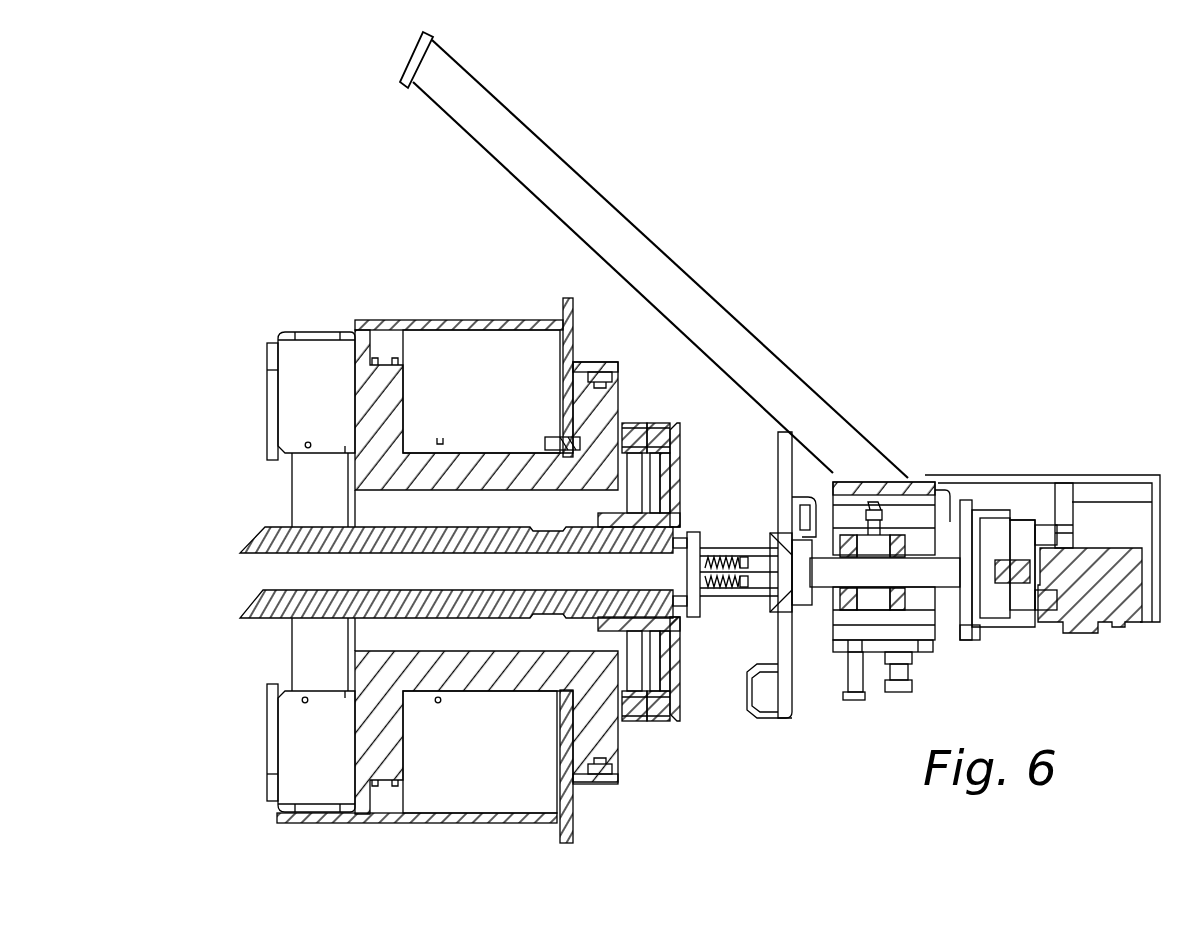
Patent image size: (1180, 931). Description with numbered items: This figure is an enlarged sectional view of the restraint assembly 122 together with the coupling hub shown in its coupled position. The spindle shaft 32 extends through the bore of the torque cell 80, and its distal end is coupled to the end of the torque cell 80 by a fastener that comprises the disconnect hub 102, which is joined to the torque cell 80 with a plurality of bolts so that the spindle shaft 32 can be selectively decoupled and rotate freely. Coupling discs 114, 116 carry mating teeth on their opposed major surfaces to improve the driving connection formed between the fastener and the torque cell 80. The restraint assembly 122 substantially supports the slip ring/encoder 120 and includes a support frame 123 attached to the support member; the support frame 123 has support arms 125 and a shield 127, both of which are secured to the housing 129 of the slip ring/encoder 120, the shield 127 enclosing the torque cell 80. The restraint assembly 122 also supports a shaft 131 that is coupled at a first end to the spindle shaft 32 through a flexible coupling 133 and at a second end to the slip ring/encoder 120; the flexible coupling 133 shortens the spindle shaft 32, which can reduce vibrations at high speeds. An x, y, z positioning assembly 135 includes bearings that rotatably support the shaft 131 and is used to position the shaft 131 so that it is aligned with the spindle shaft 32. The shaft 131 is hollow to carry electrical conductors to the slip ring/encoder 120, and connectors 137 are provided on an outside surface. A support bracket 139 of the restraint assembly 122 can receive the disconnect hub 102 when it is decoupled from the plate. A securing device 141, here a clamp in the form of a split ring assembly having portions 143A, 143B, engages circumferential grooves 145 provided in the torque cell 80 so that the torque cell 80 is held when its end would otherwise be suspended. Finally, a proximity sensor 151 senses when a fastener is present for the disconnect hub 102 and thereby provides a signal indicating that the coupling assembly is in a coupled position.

The spindle shaft 32 is at (270, 620).
The torque cell 80 is at (480, 453).
The disconnect hub 102 is at (681, 470).
The coupling disc 114 is at (632, 423).
The coupling disc 116 is at (656, 423).
The slip ring/encoder 120 is at (1072, 645).
The restraint assembly 122 is at (826, 360).
The support frame 123 is at (655, 255).
The support arms 125 is at (600, 190).
The shield 127 is at (420, 816).
The housing 129 is at (905, 476).
The shaft 131 is at (893, 557).
The flexible coupling 133 is at (745, 594).
The x, y, z positioning assembly 135 is at (923, 650).
The connectors 137 is at (815, 520).
The support bracket 139 is at (770, 720).
The securing device 141 is at (591, 533).
The split ring portion 143A is at (577, 354).
The split ring portion 143B is at (600, 786).
The circumferential grooves 145 is at (590, 376).
The proximity sensor 151 is at (552, 438).